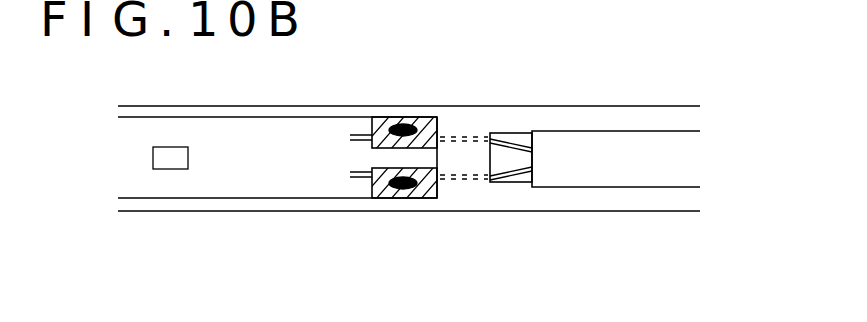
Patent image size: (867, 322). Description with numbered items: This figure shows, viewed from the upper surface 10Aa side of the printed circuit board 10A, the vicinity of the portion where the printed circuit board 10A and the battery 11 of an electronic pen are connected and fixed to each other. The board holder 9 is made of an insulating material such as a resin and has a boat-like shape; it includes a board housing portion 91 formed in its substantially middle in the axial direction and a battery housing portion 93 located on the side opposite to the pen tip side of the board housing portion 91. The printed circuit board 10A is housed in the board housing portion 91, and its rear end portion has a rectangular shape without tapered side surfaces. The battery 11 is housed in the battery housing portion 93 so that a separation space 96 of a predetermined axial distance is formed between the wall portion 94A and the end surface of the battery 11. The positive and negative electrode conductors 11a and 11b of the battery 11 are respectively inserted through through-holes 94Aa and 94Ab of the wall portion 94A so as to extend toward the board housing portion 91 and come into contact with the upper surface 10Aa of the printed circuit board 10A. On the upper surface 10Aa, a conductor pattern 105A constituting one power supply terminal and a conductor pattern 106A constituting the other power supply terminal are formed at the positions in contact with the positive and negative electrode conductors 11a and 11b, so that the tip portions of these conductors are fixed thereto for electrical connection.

The board holder 9 is at (295, 104).
The printed circuit board 10A is at (229, 130).
The upper surface 10Aa is at (155, 130).
The board housing portion 91 is at (249, 203).
The battery housing portion 93 is at (675, 205).
The conductor pattern 105A is at (381, 128).
The conductor pattern 106A is at (388, 200).
The wall portion 94A is at (466, 162).
The through-hole 94Aa is at (463, 137).
The through-hole 94Ab is at (453, 177).
The separation space 96 is at (503, 182).
The positive electrode conductor 11a is at (503, 143).
The negative electrode conductor 11b is at (522, 160).
The battery 11 is at (651, 143).